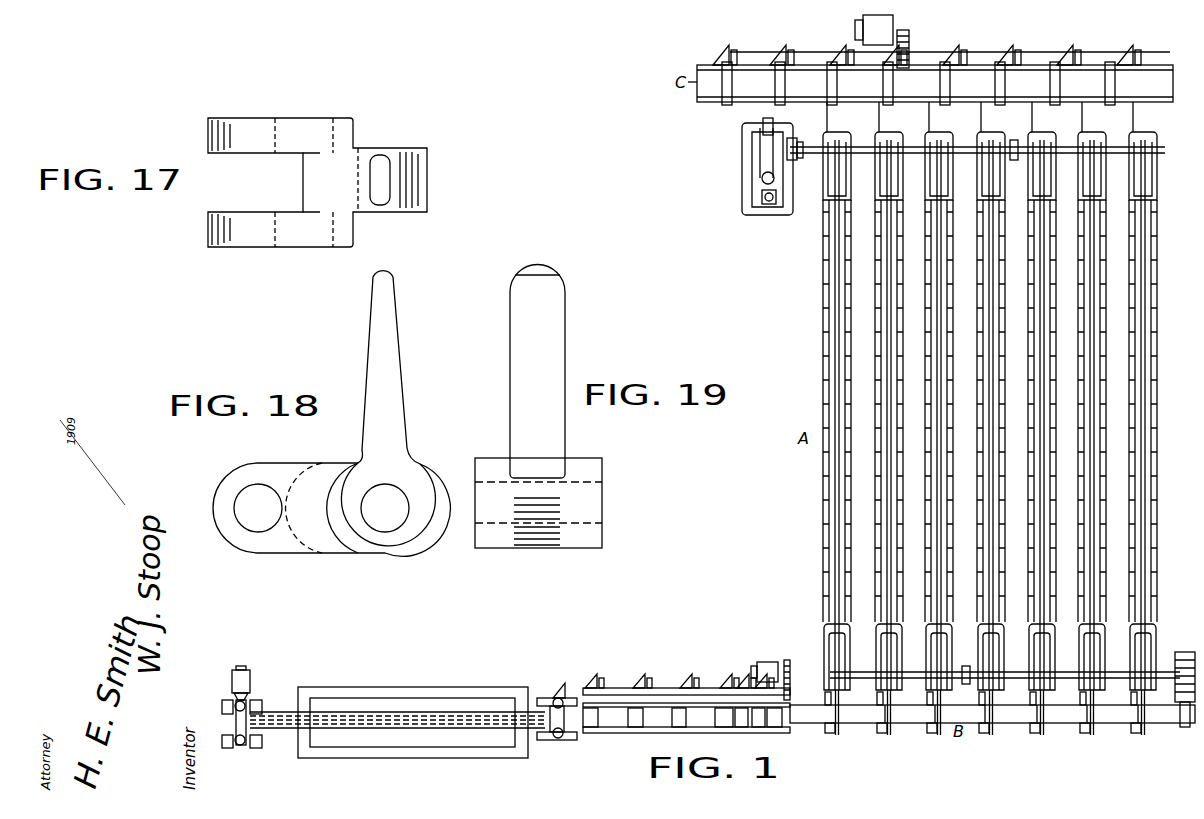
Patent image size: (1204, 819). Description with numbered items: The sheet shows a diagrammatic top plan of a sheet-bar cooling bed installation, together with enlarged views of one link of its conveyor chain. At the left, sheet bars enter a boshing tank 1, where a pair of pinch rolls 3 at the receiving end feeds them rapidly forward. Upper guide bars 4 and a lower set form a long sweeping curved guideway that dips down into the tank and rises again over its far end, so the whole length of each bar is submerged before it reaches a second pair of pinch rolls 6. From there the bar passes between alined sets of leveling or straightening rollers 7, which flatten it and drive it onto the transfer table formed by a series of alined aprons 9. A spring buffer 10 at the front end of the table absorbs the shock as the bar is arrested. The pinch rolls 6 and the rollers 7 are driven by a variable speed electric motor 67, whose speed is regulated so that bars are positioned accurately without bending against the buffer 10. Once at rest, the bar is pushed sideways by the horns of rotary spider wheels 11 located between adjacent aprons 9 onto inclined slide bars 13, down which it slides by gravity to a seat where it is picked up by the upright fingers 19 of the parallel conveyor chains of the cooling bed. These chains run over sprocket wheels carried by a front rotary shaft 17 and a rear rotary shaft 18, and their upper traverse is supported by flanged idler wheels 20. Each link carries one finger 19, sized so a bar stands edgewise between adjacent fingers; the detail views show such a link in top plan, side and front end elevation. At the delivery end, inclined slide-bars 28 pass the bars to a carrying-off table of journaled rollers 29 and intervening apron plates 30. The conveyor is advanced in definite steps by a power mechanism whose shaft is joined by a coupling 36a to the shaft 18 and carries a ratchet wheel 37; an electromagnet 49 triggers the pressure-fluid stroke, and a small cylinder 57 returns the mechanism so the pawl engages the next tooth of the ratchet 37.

In FIG. 1, the boshing tank 1 is at (403, 690).
In FIG. 1, the pinch rolls 3 is at (236, 725).
In FIG. 1, the upper guide bars 4 is at (395, 728).
In FIG. 1, the pinch rolls 6 is at (565, 742).
In FIG. 1, the leveling or straightening rollers 7 is at (640, 718).
In FIG. 1, the aprons 9 is at (850, 715).
In FIG. 1, the spring buffer 10 is at (1186, 724).
In FIG. 1, the rotary spider wheels 11 is at (925, 715).
In FIG. 1, the inclined slide bars 13 is at (828, 698).
In FIG. 1, the rotary shaft 17 is at (1020, 680).
In FIG. 1, the rotary shaft 18 is at (1062, 142).
In FIG. 17, the upright fingers 19 is at (395, 177).
In FIG. 18, the upright fingers 19 is at (375, 335).
In FIG. 19, the upright fingers 19 is at (518, 362).
In FIG. 1, the idler wheels 20 is at (828, 370).
In FIG. 1, the inclined slide-bars 28 is at (992, 116).
In FIG. 1, the rollers 29 is at (1060, 78).
In FIG. 1, the apron plates 30 is at (800, 75).
In FIG. 1, the coupling 36a is at (795, 140).
In FIG. 1, the ratchet wheel 37 is at (766, 127).
In FIG. 1, the electromagnet 49 is at (769, 206).
In FIG. 1, the small cylinder 57 is at (760, 182).
In FIG. 1, the variable speed electric motor 67 is at (768, 662).